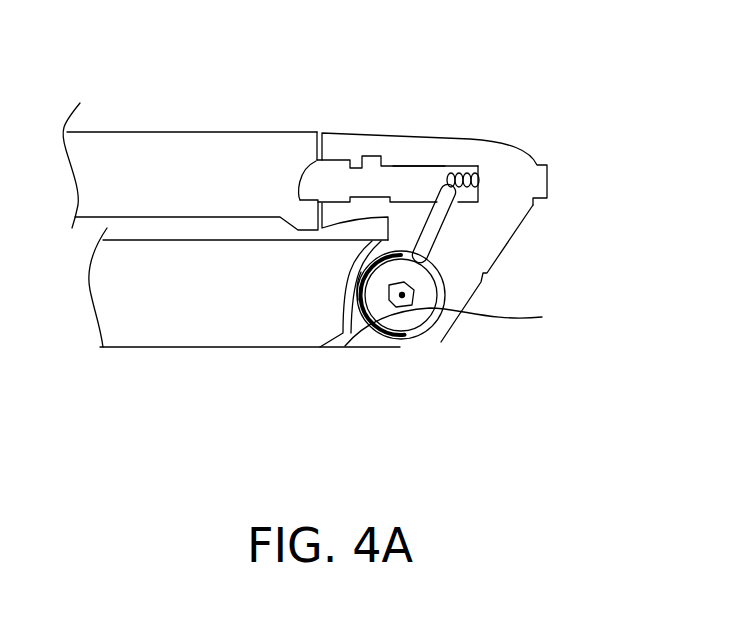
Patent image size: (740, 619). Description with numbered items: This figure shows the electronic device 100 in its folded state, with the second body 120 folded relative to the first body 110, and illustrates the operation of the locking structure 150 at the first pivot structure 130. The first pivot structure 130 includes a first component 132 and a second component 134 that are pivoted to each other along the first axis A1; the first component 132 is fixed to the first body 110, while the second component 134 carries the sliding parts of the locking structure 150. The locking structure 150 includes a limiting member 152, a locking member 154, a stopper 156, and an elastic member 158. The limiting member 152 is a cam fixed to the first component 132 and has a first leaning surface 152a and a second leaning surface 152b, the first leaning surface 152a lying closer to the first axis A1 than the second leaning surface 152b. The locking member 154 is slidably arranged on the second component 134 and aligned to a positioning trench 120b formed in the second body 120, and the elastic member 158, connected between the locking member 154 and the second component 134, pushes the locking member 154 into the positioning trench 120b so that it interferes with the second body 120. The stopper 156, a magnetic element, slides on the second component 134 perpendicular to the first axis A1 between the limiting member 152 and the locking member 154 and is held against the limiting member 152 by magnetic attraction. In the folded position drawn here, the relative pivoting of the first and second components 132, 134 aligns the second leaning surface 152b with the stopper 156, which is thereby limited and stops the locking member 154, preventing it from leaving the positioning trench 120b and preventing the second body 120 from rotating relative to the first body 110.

The electronic device 100 is at (604, 449).
The first body 110 is at (181, 320).
The second body 120 is at (167, 160).
The positioning trench 120b is at (295, 192).
The first pivot structure 130 is at (590, 253).
The first component 132 is at (465, 324).
The second component 134 is at (482, 264).
The locking structure 150 is at (578, 44).
The limiting member 152 is at (481, 280).
The first leaning surface 152a is at (420, 328).
The second leaning surface 152b is at (355, 273).
The locking member 154 is at (397, 178).
The stopper 156 is at (422, 278).
The elastic member 158 is at (462, 165).
The first axis A1 is at (398, 296).